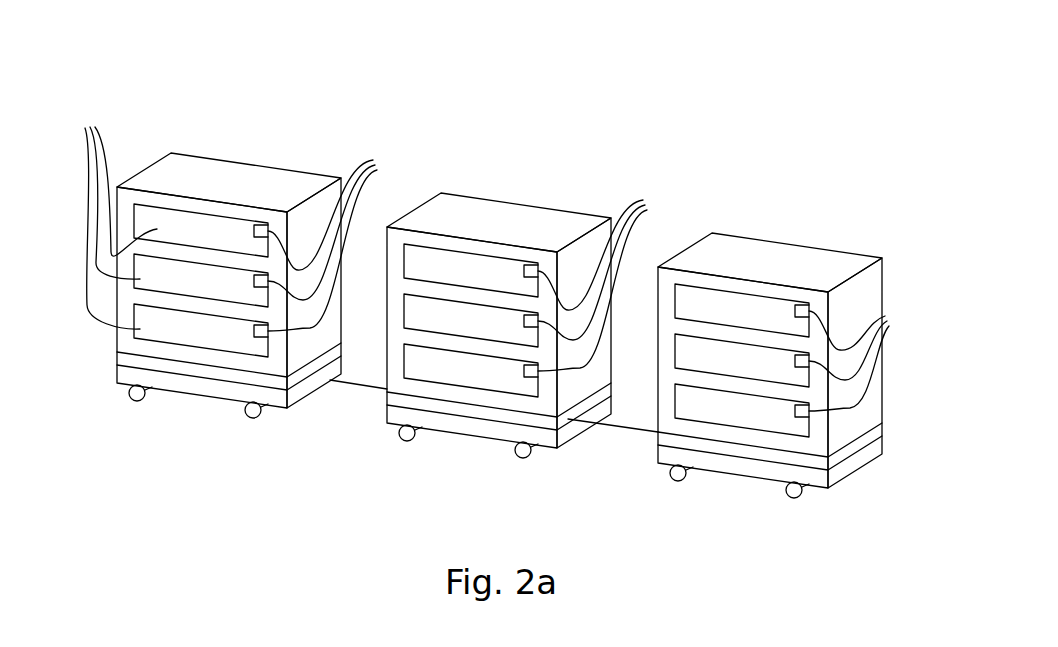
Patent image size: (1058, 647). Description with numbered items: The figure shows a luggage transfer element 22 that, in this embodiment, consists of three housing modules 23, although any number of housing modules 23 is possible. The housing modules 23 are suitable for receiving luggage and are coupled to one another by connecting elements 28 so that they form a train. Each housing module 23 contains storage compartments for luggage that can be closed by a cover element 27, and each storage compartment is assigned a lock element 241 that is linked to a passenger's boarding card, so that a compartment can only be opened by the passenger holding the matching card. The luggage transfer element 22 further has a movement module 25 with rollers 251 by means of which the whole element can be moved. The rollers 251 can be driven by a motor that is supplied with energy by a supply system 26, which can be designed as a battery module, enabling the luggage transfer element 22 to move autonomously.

The luggage transfer element 22 is at (724, 120).
The housing module 23 is at (217, 175).
The lock element 241 is at (608, 281).
The cover element 27 is at (107, 222).
The movement module 25 is at (188, 388).
The supply system 26 is at (240, 377).
The rollers 251 is at (126, 402).
The connecting element 28 is at (352, 386).